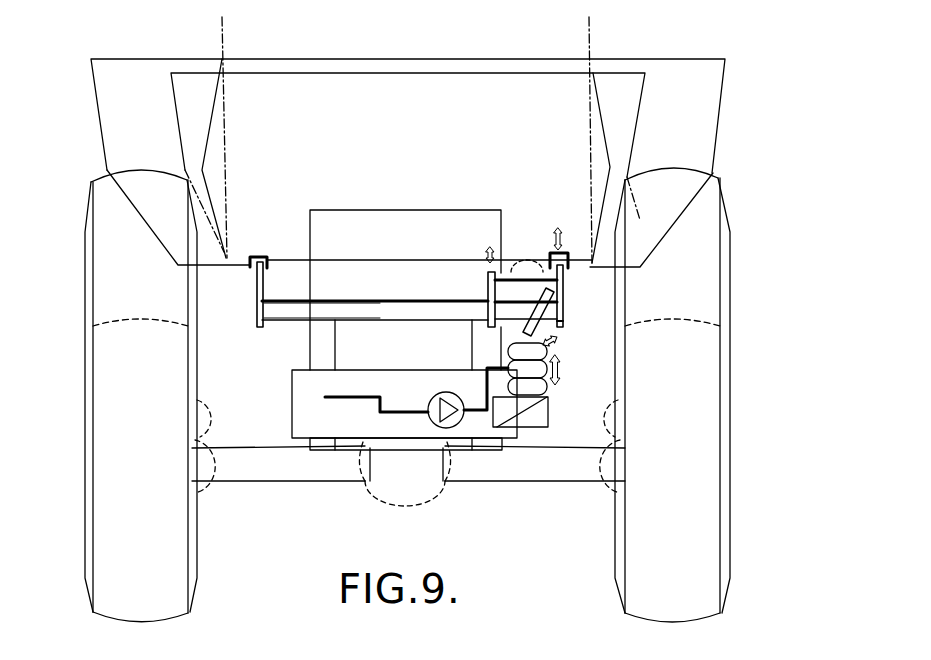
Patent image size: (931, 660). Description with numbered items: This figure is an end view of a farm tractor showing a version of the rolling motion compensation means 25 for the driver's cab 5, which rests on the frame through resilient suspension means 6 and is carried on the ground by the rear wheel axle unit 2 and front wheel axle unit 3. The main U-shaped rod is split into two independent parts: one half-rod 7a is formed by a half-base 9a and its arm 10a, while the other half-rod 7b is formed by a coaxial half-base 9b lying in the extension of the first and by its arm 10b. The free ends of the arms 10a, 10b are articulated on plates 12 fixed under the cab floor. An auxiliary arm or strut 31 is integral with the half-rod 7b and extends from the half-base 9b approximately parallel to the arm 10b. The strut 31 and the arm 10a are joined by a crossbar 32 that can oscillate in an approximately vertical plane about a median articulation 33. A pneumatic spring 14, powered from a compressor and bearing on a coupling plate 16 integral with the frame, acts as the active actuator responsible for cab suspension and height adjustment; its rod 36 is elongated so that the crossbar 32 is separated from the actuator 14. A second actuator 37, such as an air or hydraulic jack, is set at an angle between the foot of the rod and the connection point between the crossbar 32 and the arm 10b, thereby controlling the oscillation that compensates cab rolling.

The rear wheel axle unit 2 is at (713, 275).
The front wheel axle unit 3 is at (705, 401).
The driver's cab 5 is at (560, 50).
The resilient suspension means 6 is at (379, 297).
The half-rod 7a is at (293, 297).
The half-rod 7b is at (568, 295).
The half-base 9a is at (277, 315).
The half-base 9b is at (500, 325).
The arm 10a is at (265, 283).
The arm 10b is at (565, 278).
The plates 12 is at (260, 257).
The pneumatic spring 14 is at (528, 390).
The coupling plate 16 is at (523, 407).
The rolling motion compensation means 25 is at (567, 321).
The auxiliary arm or strut 31 is at (488, 278).
The crossbar 32 is at (495, 272).
The median articulation 33 is at (526, 337).
The rod of the pneumatic active actuator 36 is at (520, 293).
The second actuator 37 is at (531, 336).